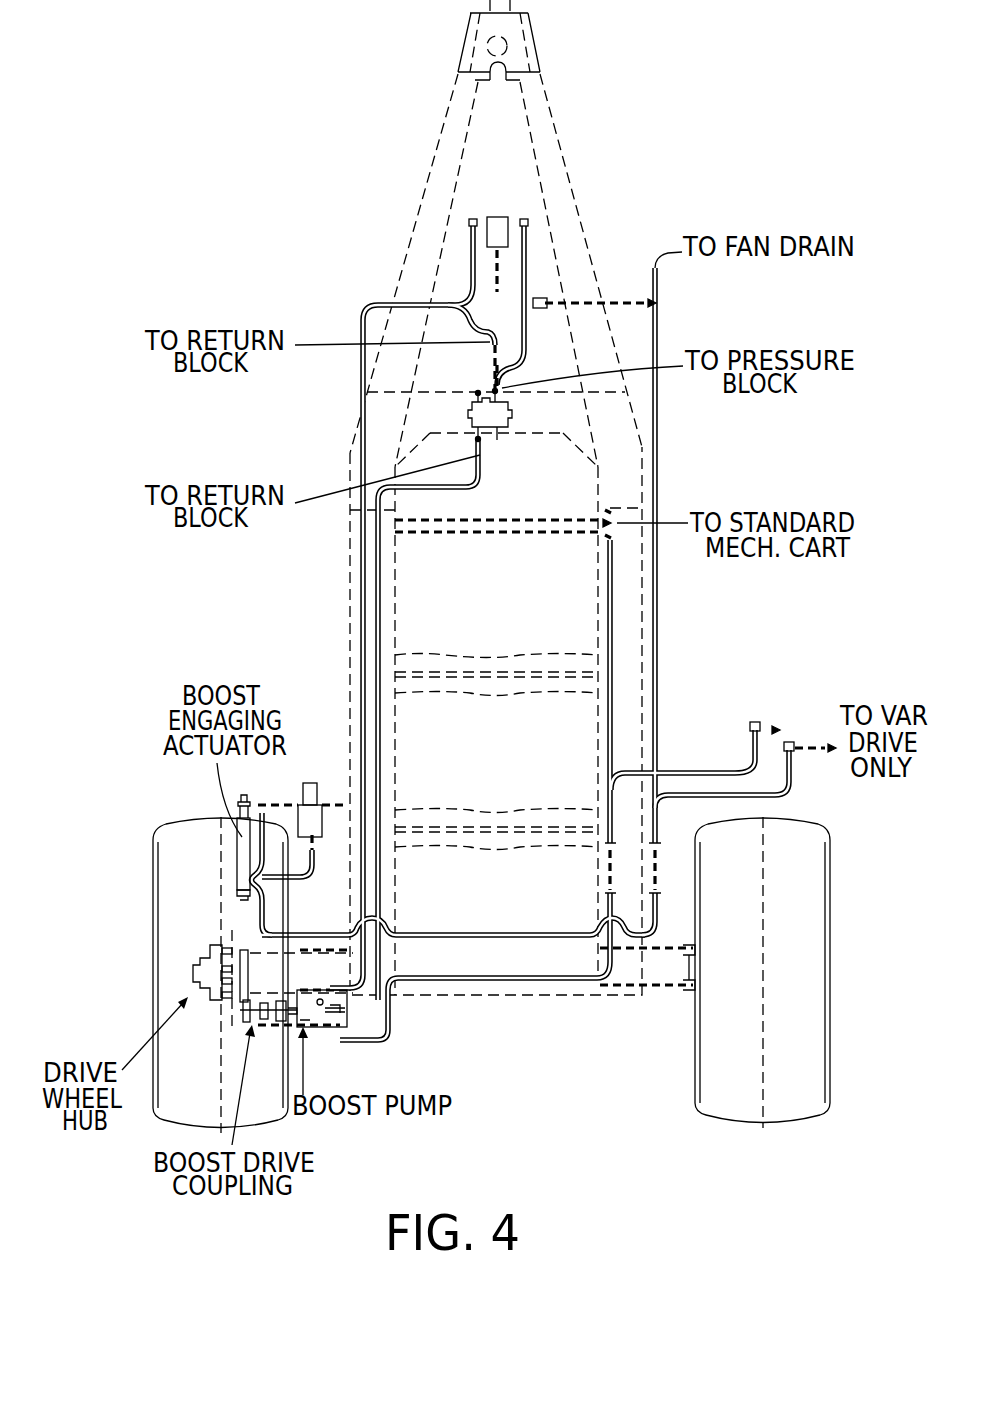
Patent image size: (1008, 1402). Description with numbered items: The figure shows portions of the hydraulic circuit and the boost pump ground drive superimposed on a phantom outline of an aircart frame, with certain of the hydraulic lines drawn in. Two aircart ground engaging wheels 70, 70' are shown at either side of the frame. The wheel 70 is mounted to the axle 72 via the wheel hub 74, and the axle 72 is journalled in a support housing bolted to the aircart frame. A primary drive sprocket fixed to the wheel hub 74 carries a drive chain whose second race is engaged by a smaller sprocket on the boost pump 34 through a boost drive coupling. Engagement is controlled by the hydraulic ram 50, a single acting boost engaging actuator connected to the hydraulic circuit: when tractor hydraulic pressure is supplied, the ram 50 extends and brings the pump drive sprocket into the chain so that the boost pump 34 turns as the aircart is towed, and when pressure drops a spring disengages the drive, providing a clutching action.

The hydraulic ram 50 is at (242, 862).
The wheel hub 74 is at (228, 947).
The aircart ground engaging wheel 70 is at (183, 975).
The aircart ground engaging wheel 70' is at (798, 972).
The boost pump 34 is at (312, 1020).
The axle 72 is at (562, 987).